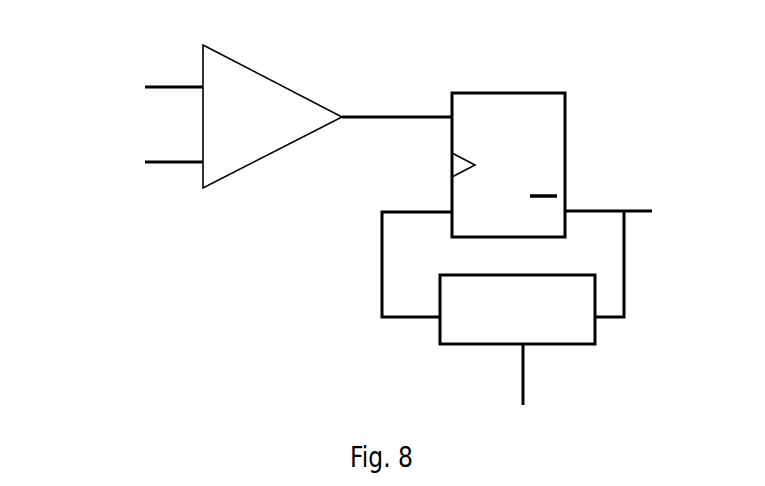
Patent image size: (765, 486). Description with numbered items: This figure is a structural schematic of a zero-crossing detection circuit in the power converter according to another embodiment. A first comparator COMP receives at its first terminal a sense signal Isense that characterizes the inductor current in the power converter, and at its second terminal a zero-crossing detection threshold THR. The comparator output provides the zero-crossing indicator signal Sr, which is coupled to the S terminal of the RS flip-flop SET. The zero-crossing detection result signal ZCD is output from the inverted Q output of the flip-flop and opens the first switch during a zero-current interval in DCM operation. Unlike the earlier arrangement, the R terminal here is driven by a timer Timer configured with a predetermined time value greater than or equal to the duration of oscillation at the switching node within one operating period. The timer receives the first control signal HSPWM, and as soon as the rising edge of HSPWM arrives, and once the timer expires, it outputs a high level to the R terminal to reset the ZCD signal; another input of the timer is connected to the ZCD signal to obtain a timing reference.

The sense signal Isense is at (139, 69).
The zero-crossing detection threshold THR is at (150, 188).
The first comparator COMP is at (272, 116).
The zero-crossing indicator signal Sr is at (397, 100).
The RS flip-flop SET is at (508, 165).
The zero-crossing detection result signal ZCD is at (616, 247).
The timer Timer is at (517, 309).
The first control signal HSPWM is at (580, 374).